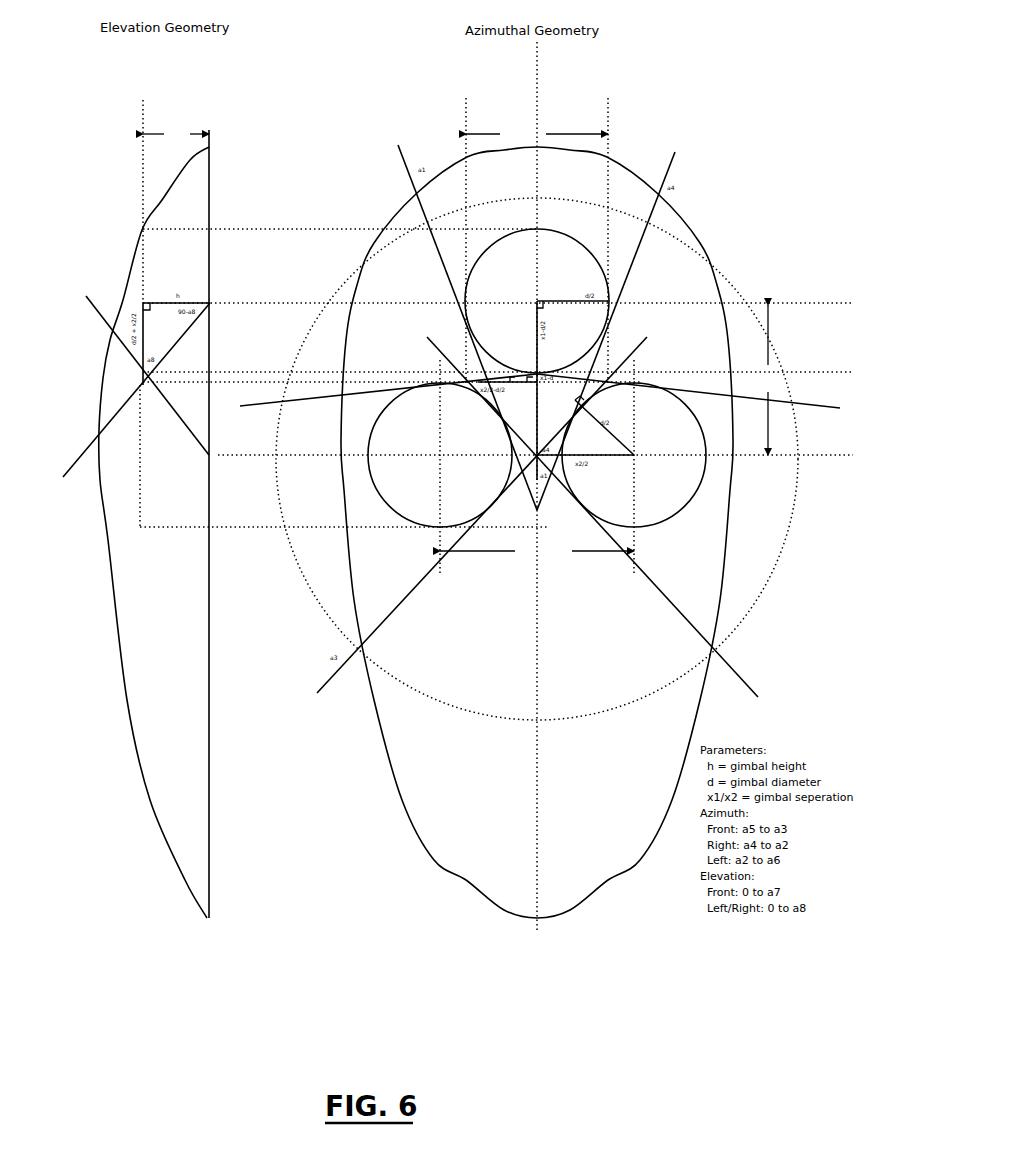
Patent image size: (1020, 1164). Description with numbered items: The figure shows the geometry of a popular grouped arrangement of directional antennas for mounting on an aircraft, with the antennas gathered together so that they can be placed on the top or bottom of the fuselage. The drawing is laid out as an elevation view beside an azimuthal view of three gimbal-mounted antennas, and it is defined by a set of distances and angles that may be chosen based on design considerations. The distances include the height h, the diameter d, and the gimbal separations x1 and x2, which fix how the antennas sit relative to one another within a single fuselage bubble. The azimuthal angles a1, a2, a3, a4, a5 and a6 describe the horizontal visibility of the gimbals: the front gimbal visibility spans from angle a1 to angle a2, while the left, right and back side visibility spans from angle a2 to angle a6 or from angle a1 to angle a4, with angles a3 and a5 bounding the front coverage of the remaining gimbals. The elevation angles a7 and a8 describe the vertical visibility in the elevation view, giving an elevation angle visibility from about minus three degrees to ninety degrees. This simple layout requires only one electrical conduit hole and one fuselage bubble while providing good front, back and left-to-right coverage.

The angle a1 is at (460, 318).
The angle a2 is at (613, 322).
The angle a3 is at (375, 394).
The angle a4 is at (473, 527).
The angle a5 is at (700, 396).
The angle a6 is at (606, 525).
The angle a7 is at (136, 401).
The angle a8 is at (137, 363).
The distance h is at (176, 135).
The distance d is at (537, 135).
The distance x1 is at (767, 380).
The distance x2 is at (537, 551).